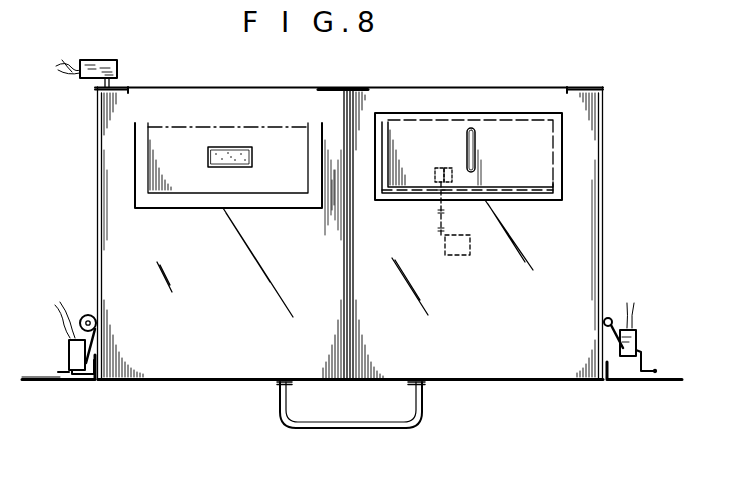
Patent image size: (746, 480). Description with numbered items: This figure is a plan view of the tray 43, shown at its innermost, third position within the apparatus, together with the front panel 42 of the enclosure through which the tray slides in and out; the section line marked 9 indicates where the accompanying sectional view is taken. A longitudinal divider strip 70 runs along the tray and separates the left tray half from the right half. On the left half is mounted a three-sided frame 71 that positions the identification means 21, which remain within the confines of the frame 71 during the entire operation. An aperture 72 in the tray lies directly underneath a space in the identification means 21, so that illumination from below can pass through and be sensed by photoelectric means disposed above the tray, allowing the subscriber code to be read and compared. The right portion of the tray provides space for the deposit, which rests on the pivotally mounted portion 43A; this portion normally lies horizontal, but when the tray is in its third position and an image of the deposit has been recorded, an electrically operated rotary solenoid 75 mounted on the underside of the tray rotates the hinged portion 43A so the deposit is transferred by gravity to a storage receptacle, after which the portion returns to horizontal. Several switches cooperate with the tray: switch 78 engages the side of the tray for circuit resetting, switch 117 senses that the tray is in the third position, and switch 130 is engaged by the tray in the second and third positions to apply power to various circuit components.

The section line 9- 9 is at (492, 63).
The identification means 21 is at (176, 127).
The front panel 42 is at (43, 383).
The tray 43 is at (215, 383).
The pivotally mounted portion 43A is at (528, 118).
The longitudinal divider strip 70 is at (352, 248).
The three-sided frame 71 is at (190, 209).
The aperture 72 is at (228, 150).
The electrically operated rotary solenoid 75 is at (458, 256).
The switch 78 is at (72, 353).
The switch 117 is at (100, 63).
The switch 130 is at (637, 340).